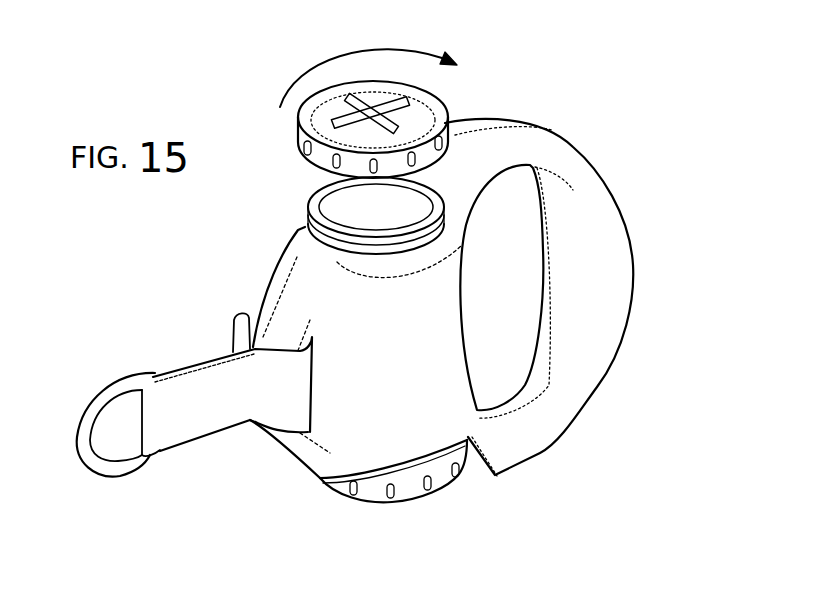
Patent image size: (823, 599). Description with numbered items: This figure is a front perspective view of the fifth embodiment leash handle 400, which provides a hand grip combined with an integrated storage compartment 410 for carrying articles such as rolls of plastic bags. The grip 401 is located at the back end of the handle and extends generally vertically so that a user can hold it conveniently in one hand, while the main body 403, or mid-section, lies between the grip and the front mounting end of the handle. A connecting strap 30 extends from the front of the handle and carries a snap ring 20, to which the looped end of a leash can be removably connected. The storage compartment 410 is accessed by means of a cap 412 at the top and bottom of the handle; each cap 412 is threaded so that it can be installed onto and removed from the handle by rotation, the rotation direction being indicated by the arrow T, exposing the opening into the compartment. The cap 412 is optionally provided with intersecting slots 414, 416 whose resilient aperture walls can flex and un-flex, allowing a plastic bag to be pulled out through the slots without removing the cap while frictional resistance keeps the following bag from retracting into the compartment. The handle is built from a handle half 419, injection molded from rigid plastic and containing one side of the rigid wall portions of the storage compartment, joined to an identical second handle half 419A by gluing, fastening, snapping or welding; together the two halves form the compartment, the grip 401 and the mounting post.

The leash handle 400 is at (577, 137).
The grip 401 is at (592, 278).
The main body 403 is at (388, 357).
The storage compartment 410 is at (370, 216).
The cap 412 is at (425, 108).
The slot 414 is at (376, 114).
The slot 416 is at (455, 131).
The handle half 419 is at (418, 418).
The second handle half 419A is at (273, 272).
The connecting strap 30 is at (212, 449).
The snap ring 20 is at (78, 474).
The rotation direction T is at (382, 78).